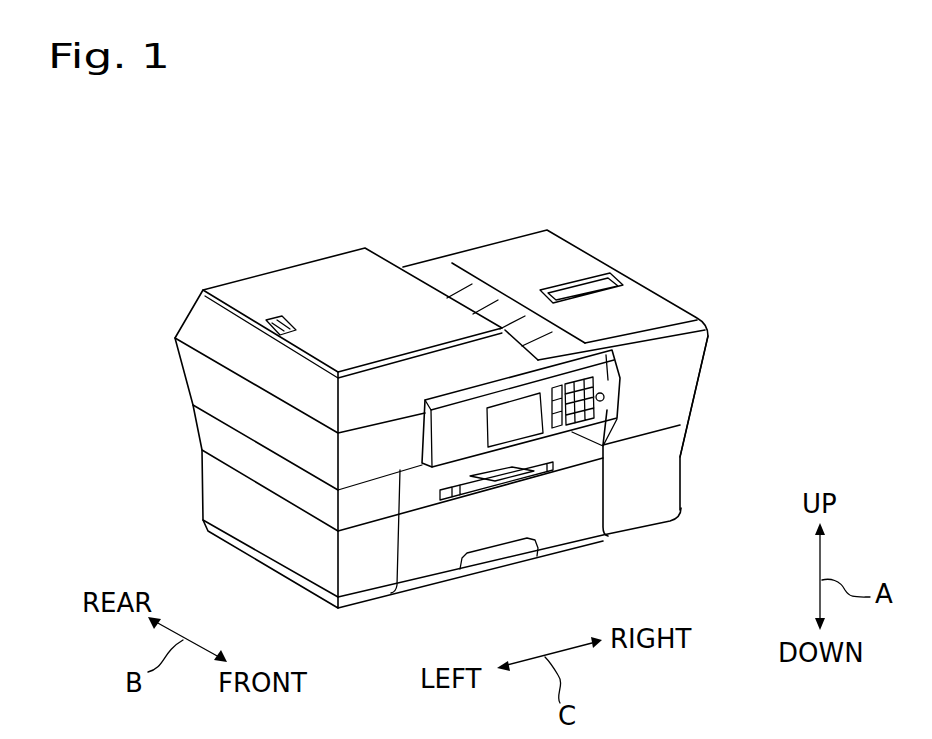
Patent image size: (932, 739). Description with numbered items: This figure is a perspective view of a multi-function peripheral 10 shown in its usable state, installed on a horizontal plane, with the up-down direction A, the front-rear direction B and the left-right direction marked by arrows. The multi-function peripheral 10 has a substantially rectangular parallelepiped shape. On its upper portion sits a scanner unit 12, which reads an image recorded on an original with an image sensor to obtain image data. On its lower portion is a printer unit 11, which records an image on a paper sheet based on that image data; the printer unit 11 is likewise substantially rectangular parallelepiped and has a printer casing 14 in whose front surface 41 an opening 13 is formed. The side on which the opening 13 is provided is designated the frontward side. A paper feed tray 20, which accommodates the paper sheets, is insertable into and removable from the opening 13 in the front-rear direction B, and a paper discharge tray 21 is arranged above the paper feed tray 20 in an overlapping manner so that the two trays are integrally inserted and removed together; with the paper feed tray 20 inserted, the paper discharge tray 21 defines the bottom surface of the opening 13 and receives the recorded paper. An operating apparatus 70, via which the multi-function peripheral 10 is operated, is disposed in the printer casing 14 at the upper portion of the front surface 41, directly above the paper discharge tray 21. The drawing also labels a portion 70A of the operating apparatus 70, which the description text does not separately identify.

The multi-function peripheral 10 is at (622, 219).
The printer unit 11 is at (648, 487).
The scanner unit 12 is at (307, 277).
The opening 13 is at (618, 441).
The printer casing 14 is at (270, 530).
The paper feed tray 20 is at (562, 517).
The paper discharge tray 21 is at (416, 508).
The front surface 41 is at (393, 462).
The operating apparatus 70 is at (623, 405).
The operation panel right portion 70A is at (607, 380).